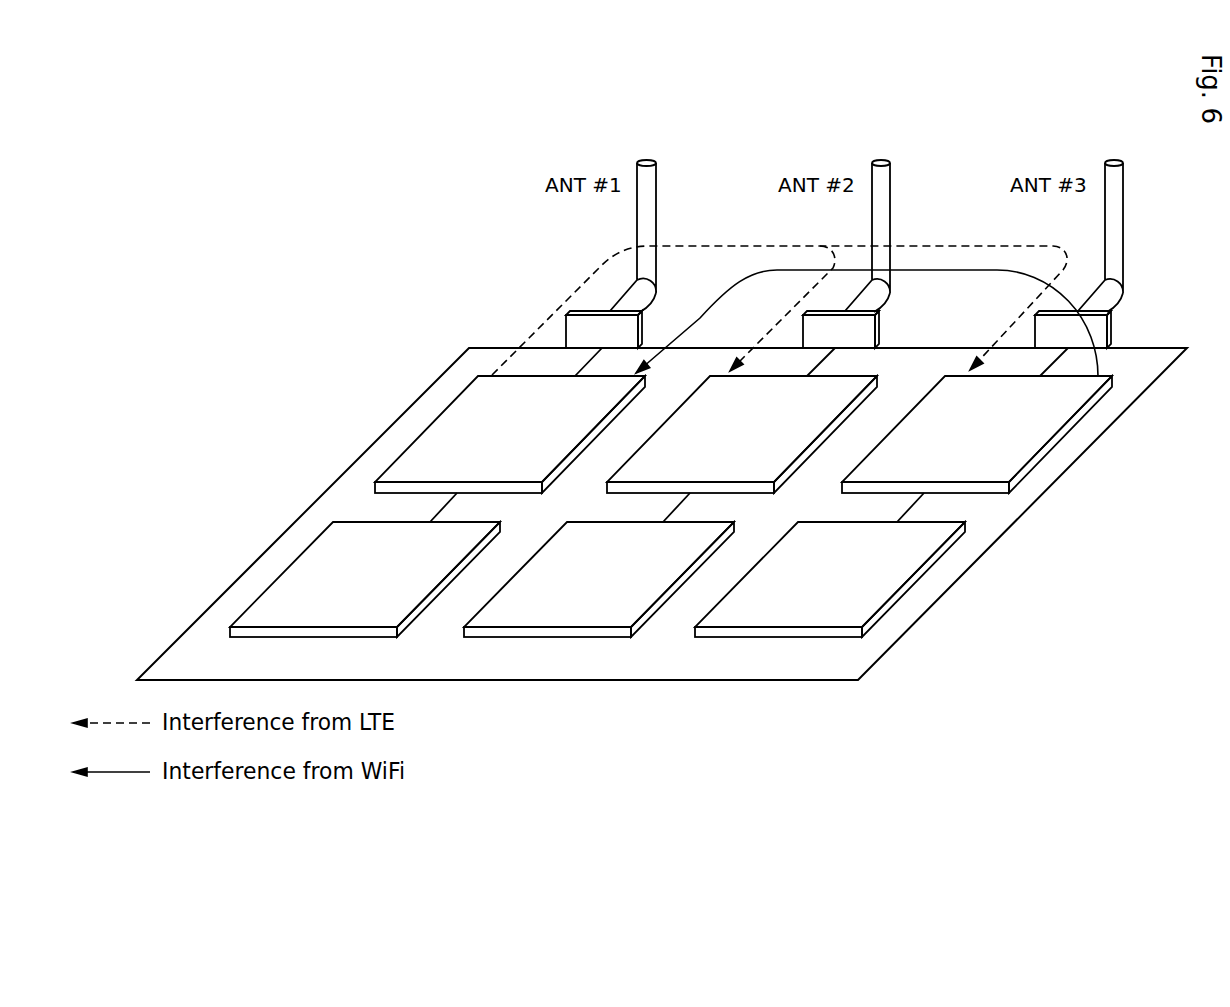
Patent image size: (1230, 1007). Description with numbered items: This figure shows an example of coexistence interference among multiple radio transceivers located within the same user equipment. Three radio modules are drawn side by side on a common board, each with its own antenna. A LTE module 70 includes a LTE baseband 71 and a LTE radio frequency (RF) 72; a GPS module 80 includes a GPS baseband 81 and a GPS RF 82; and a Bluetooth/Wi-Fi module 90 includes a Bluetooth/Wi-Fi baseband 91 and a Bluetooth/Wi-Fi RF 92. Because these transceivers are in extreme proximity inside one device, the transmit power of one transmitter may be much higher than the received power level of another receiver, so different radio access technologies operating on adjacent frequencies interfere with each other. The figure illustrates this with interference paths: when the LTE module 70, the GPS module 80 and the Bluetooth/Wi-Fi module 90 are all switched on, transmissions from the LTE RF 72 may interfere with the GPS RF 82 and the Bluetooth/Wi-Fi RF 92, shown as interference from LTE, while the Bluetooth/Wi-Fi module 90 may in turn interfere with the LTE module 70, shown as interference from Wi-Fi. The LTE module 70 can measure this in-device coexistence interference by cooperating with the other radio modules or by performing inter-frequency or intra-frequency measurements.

The LTE module 70 is at (393, 524).
The LTE baseband 71 is at (284, 572).
The LTE radio frequency (RF) 72 is at (428, 427).
The GPS module 80 is at (670, 559).
The GPS baseband 81 is at (508, 617).
The GPS RF 82 is at (628, 466).
The Bluetooth/Wi-Fi module 90 is at (934, 524).
The Bluetooth/Wi-Fi baseband 91 is at (907, 565).
The Bluetooth/Wi-Fi RF 92 is at (1048, 423).